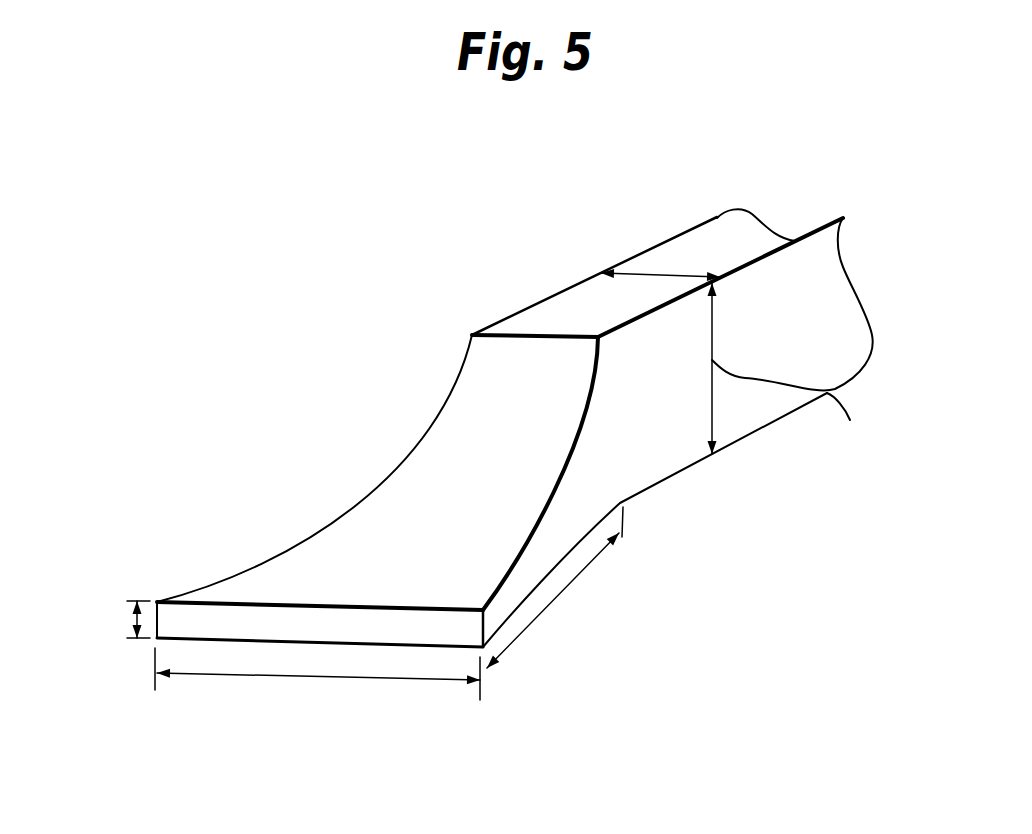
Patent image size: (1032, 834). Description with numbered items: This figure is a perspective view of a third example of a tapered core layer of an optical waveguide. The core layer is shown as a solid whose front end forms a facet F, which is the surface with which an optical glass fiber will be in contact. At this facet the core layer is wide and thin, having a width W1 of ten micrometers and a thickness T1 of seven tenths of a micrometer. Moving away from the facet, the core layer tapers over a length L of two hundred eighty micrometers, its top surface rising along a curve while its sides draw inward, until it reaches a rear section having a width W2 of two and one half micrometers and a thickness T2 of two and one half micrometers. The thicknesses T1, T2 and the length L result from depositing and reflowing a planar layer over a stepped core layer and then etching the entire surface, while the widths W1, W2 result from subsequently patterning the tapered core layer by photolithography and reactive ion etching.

The facet F is at (251, 626).
The width W1 is at (317, 684).
The thickness T1 is at (133, 617).
The width W2 is at (658, 275).
The thickness T2 is at (816, 373).
The length L is at (591, 587).